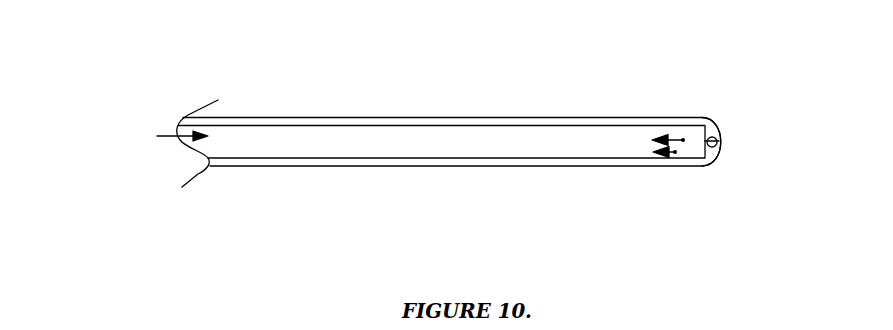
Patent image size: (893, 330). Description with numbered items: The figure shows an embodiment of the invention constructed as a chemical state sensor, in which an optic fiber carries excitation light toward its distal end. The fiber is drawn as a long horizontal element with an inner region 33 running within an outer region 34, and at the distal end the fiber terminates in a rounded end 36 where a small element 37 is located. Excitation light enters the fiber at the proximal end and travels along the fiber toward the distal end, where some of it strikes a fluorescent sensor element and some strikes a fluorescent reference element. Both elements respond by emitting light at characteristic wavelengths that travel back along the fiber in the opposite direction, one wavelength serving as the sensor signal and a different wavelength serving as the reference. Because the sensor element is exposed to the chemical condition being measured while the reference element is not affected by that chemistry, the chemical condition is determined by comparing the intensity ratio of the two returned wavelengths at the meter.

The core 33 is at (293, 142).
The cladding 34 is at (393, 117).
The rounded fiber end 36 is at (706, 111).
The reflective element 37 is at (718, 131).